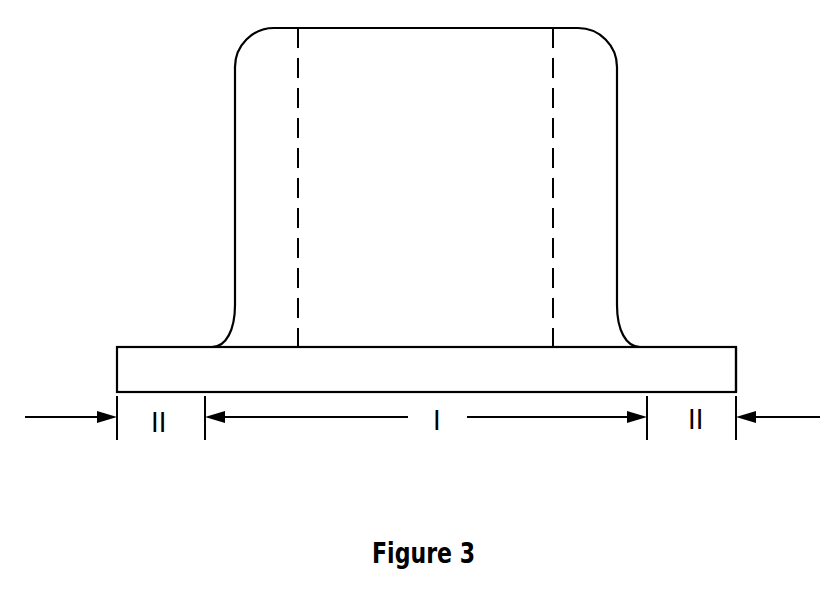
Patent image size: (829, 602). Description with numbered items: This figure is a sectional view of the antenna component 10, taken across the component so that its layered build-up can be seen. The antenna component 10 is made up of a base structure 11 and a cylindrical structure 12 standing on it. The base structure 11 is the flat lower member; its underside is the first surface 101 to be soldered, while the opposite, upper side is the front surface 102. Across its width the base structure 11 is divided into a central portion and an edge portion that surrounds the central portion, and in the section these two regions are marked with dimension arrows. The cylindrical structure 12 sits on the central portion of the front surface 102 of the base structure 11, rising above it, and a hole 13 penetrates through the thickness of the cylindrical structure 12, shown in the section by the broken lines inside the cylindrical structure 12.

The antenna component 10 is at (205, 64).
The base structure 11 is at (188, 375).
The cylindrical structure 12 is at (588, 237).
The hole 13 is at (498, 172).
The first surface to be soldered 101 is at (782, 335).
The front surface 102 is at (183, 280).